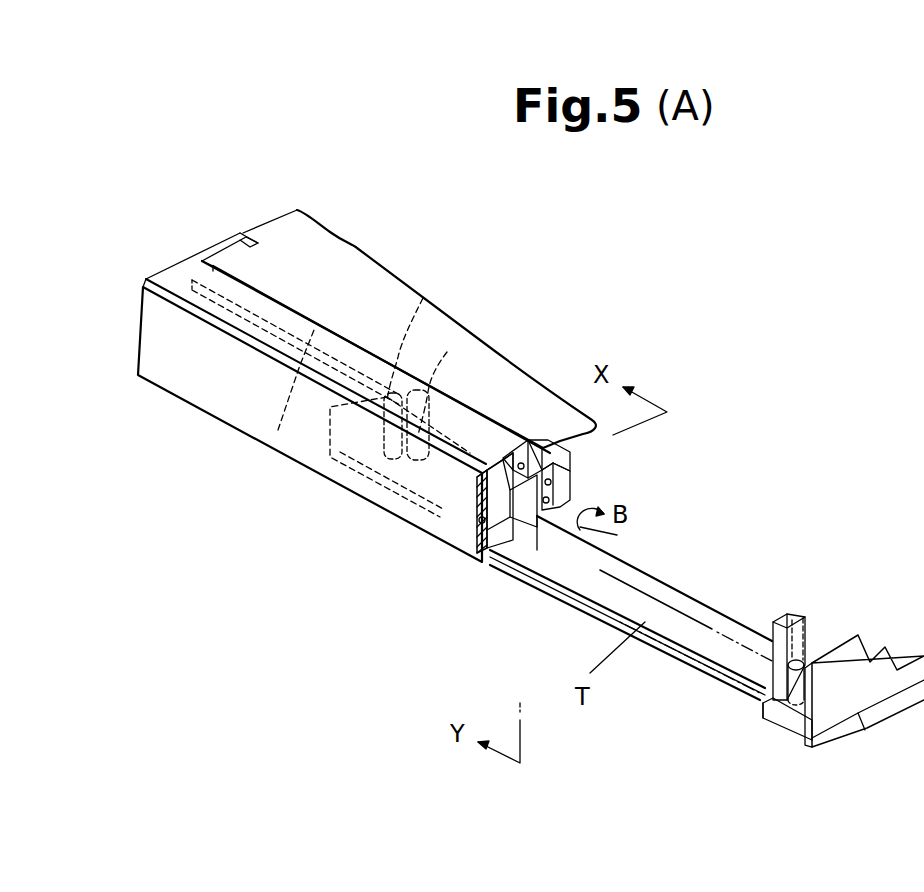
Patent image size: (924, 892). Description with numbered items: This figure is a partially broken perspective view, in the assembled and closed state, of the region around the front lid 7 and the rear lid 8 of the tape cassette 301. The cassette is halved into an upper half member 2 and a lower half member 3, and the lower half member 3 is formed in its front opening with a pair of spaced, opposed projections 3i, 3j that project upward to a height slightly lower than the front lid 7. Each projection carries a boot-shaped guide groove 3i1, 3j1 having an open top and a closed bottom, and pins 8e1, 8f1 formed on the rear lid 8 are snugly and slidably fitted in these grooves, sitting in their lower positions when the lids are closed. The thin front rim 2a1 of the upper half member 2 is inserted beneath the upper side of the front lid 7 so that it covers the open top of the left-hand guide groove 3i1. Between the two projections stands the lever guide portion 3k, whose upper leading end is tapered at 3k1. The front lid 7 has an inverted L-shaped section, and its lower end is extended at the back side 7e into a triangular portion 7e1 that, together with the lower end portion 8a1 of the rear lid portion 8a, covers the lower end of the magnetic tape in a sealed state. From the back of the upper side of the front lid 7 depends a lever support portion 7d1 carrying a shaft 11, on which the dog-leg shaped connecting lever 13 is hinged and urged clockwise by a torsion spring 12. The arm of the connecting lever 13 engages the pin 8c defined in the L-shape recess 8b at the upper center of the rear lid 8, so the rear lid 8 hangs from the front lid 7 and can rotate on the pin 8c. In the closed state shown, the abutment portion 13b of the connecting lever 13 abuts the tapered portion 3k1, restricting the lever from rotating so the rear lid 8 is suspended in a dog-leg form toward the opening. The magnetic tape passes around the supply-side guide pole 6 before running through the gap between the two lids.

The tape cassette 301 is at (664, 213).
The upper half member 2 is at (360, 247).
The front rim 2a1 is at (280, 425).
The lower half member 3 is at (838, 738).
The projection 3i is at (423, 298).
The guide groove 3i1 is at (447, 352).
The projection 3j is at (822, 612).
The guide groove 3j1 is at (793, 612).
The lever guide portion 3k is at (572, 500).
The tapered portion 3k1 is at (572, 473).
The guide pole 6 is at (795, 713).
The front lid 7 is at (228, 387).
The lever support portion 7d1 is at (510, 452).
The back side 7e is at (480, 532).
The triangular portion 7e1 is at (493, 560).
The rear lid 8 is at (632, 621).
The rear lid portion 8a is at (680, 600).
The lower end portion 8a1 is at (690, 672).
The L-shape recess 8b is at (480, 567).
The pin 8c is at (610, 551).
The pin 8e1 is at (365, 503).
The pin 8f1 is at (757, 703).
The shaft 11 is at (570, 495).
The torsion spring 12 is at (522, 455).
The connecting lever 13 is at (533, 565).
The abutment portion 13b is at (580, 452).